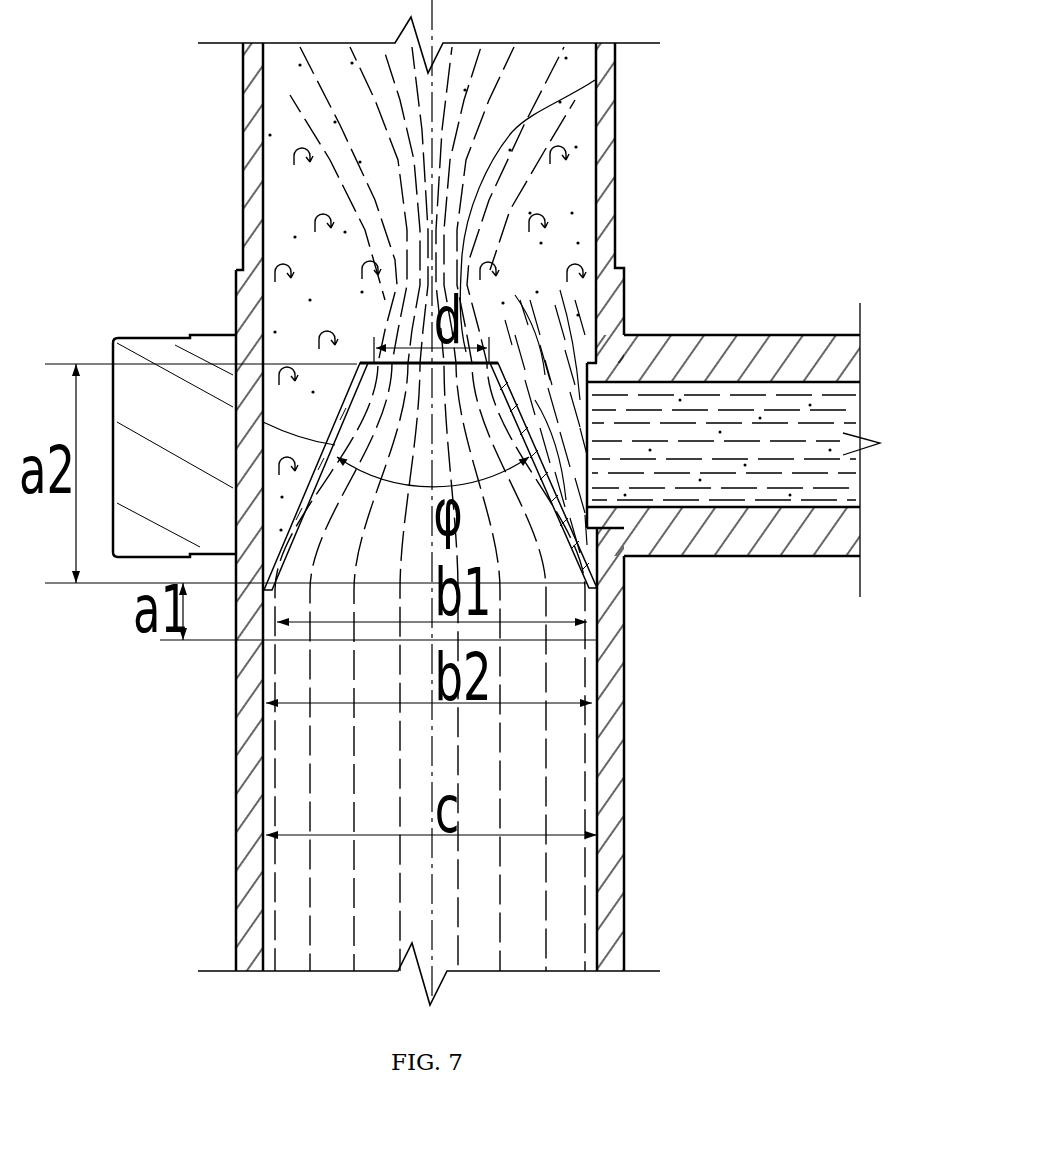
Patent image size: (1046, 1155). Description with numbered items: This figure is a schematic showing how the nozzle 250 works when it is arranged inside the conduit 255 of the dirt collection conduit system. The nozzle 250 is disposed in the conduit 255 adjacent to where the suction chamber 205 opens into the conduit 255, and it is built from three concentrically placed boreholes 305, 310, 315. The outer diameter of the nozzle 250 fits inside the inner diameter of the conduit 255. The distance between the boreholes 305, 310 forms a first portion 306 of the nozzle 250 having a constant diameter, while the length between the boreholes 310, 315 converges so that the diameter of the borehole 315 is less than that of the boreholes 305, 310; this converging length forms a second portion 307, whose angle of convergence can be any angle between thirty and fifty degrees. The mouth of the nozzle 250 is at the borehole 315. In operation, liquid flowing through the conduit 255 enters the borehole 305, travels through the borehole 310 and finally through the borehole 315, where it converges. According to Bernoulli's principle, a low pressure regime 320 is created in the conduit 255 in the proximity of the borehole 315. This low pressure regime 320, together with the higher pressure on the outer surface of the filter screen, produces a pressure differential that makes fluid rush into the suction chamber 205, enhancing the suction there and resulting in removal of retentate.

The suction chamber 205 is at (720, 342).
The nozzle 250 is at (522, 327).
The conduit 255 is at (620, 232).
The borehole 305 is at (578, 630).
The first portion 306 is at (262, 612).
The second portion 307 is at (245, 410).
The borehole 310 is at (598, 600).
The borehole 315 is at (377, 350).
The low pressure regime 320 is at (578, 103).